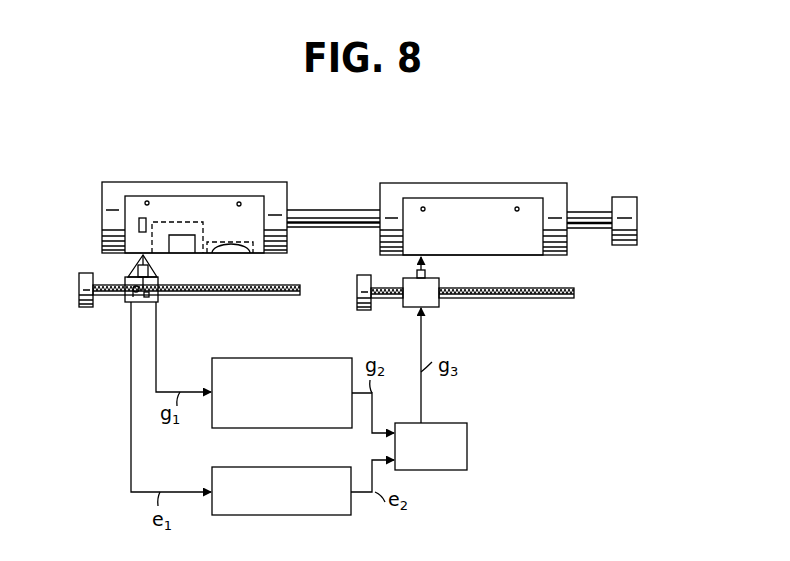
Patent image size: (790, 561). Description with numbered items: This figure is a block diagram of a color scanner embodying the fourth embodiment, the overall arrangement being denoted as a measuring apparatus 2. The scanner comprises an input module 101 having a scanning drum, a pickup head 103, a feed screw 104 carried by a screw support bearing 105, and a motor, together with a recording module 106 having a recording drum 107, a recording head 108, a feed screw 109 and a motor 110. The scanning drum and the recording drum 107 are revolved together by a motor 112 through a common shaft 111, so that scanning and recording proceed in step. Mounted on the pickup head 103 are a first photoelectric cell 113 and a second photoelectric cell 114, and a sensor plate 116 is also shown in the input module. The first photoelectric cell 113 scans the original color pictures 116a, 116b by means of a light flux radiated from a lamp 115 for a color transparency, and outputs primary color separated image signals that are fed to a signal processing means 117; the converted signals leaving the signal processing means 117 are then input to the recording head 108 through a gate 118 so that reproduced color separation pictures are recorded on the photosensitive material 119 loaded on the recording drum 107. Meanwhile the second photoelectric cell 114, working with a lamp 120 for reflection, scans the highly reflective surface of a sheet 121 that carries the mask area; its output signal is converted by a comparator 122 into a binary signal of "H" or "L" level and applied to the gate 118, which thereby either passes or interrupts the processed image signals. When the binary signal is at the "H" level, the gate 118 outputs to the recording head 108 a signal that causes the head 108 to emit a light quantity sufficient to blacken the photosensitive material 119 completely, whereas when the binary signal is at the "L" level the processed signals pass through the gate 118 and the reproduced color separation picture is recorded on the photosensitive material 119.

The measuring apparatus 2 is at (283, 197).
The input module 101 is at (280, 181).
The pickup head 103 is at (159, 300).
The feed screw 104 is at (241, 296).
The screw support bearing 105 is at (80, 293).
The recording module 106 is at (538, 183).
The recording drum 107 is at (565, 193).
The recording head 108 is at (441, 307).
The feed screw 109 is at (549, 299).
The motor 110 is at (358, 291).
The common shaft 111 is at (362, 228).
The motor 112 is at (637, 237).
The first photoelectric cell 113 is at (145, 299).
The second photoelectric cell 114 is at (133, 296).
The lamp for a color transparency 115 is at (142, 217).
The sensor plate 116 is at (170, 195).
The original color picture 116a is at (196, 221).
The original color picture 116b is at (236, 241).
The signal processing means 117 is at (318, 358).
The gate 118 is at (467, 451).
The photosensitive material 119 is at (537, 252).
The lamp for reflection 120 is at (128, 272).
The sheet 121 is at (125, 210).
The comparator 122 is at (323, 515).